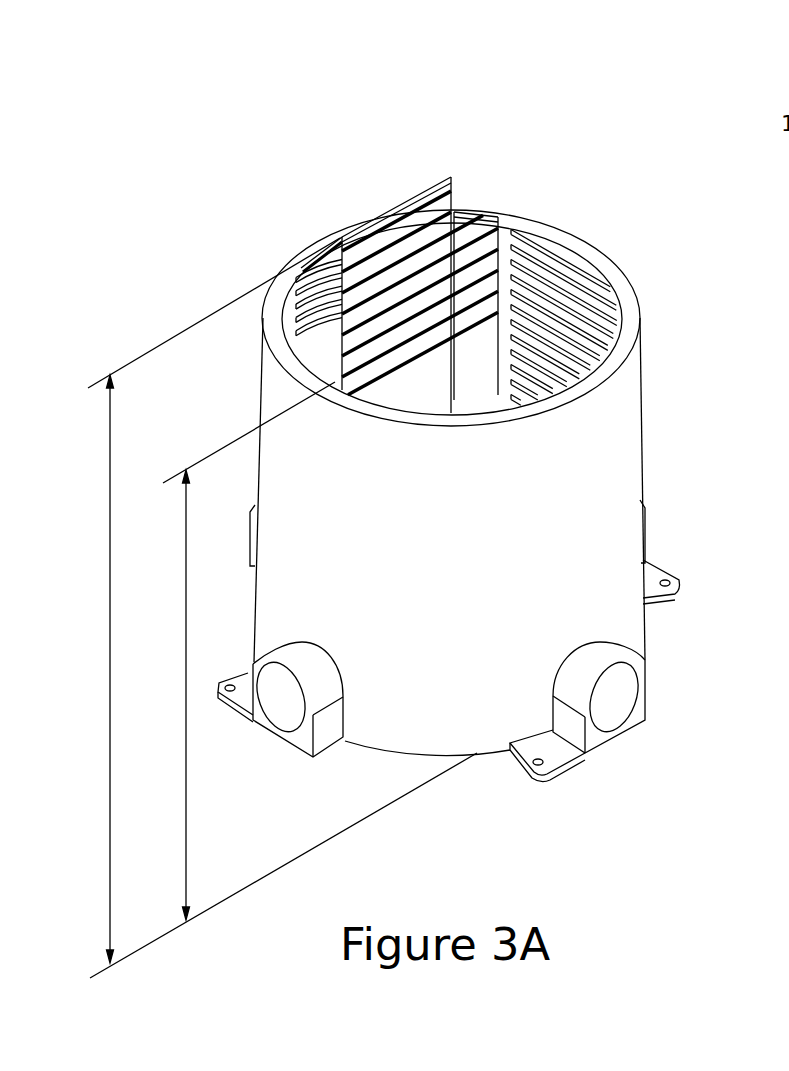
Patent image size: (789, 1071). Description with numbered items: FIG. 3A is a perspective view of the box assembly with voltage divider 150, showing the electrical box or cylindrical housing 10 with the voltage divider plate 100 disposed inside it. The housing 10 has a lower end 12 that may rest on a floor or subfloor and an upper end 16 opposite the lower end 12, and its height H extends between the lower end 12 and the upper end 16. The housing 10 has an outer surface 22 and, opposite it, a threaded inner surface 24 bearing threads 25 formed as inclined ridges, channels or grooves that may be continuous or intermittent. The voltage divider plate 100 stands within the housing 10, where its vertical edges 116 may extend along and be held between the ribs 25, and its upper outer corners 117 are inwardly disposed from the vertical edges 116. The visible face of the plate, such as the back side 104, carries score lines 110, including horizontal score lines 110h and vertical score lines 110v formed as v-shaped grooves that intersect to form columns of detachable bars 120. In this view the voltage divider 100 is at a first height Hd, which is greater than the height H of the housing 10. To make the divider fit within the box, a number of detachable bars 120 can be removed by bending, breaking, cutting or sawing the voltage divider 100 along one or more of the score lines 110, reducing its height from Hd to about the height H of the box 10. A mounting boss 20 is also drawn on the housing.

The cylindrical housing 10 is at (710, 318).
The lower end 12 is at (478, 757).
The upper end 16 is at (630, 285).
The mounting boss 20 is at (447, 699).
The outer surface 22 is at (447, 490).
The threaded inner surface 24 is at (505, 232).
The threads 25 is at (563, 260).
The voltage divider plate 100 is at (432, 197).
The back side 104 is at (328, 252).
The score lines 110 is at (376, 292).
The horizontal score lines 110h is at (452, 205).
The vertical score lines 110v is at (330, 300).
The vertical edges 116 is at (513, 232).
The upper outer corners 117 is at (340, 237).
The detachable bars 120 is at (420, 293).
The box assembly with voltage divider 150 is at (160, 122).
The first height of the voltage divider Hd is at (108, 540).
The height of the housing H is at (185, 712).